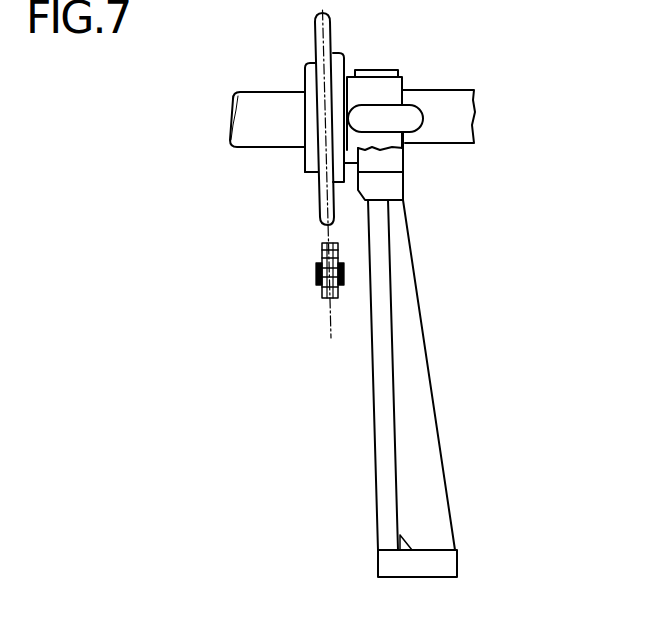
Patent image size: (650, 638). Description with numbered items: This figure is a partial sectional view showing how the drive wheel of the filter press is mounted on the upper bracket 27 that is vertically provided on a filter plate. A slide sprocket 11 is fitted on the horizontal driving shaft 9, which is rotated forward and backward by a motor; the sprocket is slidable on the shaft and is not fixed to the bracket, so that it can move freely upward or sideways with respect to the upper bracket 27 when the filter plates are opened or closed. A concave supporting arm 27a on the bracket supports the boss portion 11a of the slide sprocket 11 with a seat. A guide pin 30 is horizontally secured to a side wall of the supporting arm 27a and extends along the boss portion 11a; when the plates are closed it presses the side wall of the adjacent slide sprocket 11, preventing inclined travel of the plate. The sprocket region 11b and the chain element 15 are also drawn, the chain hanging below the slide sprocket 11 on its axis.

The driving shaft 9 is at (457, 133).
The slide sprocket 11 is at (296, 68).
The boss portion 11a is at (372, 87).
The hub 11b is at (318, 185).
The chain 15 is at (317, 275).
The upper bracket 27 is at (418, 400).
The supporting arm 27a is at (383, 158).
The guide pin 30 is at (405, 137).